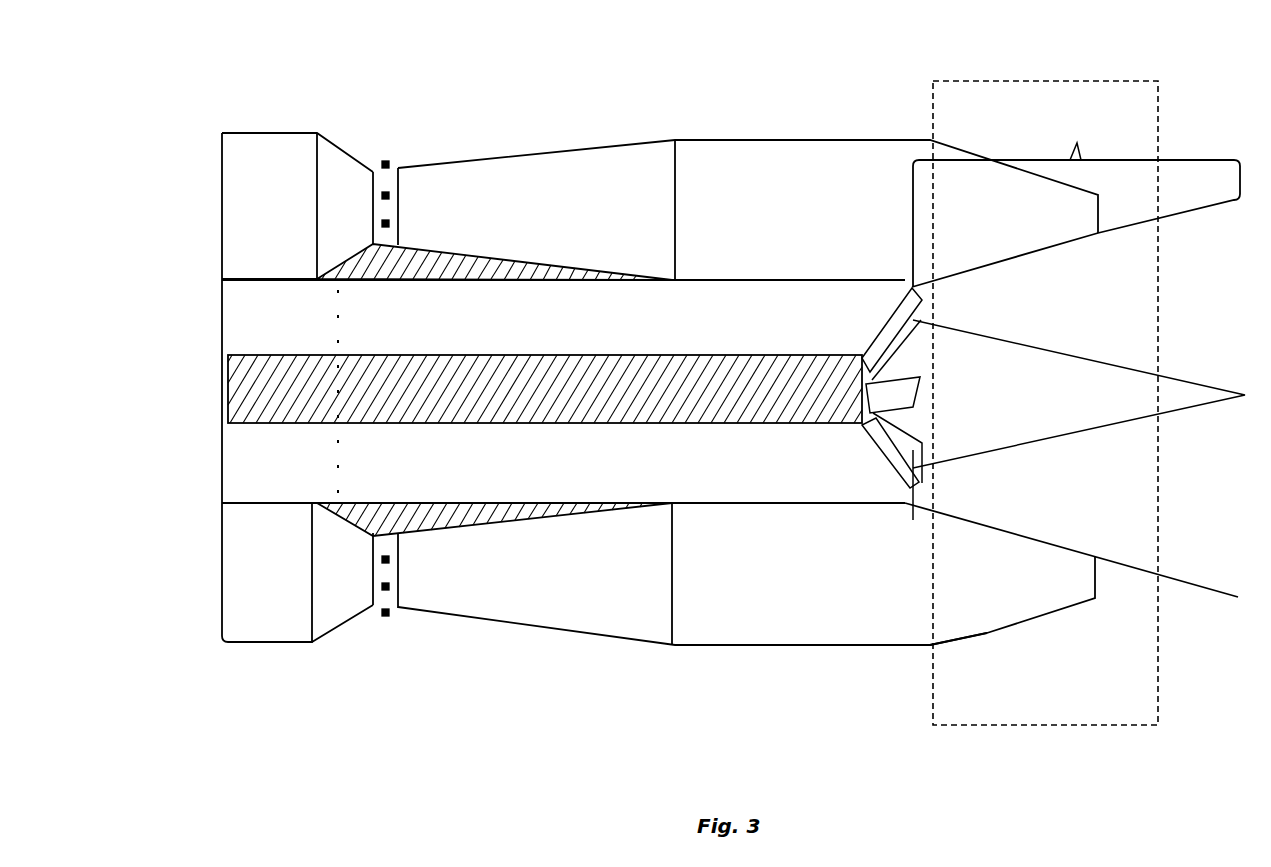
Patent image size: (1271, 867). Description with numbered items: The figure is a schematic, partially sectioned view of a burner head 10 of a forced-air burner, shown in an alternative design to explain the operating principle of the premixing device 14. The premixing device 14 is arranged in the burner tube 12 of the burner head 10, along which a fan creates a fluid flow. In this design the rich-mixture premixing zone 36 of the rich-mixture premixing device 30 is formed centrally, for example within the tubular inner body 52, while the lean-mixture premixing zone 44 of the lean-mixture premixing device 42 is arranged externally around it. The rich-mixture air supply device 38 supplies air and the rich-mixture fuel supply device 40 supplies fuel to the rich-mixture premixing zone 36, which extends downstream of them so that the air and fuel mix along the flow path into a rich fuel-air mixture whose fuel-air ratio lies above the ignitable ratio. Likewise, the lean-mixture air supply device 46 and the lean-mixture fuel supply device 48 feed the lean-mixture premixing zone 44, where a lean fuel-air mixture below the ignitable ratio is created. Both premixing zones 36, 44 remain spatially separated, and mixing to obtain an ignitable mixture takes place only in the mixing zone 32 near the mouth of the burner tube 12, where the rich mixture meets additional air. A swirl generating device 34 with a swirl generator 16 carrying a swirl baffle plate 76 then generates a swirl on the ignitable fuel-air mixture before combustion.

The burner head 10 is at (553, 778).
The burner tube 12 is at (987, 633).
The premixing device 14 is at (737, 623).
The swirl generator 16 is at (905, 300).
The rich-mixture premixing device 30 is at (352, 290).
The mixing zone 32 is at (1045, 388).
The swirl generating device 34 is at (878, 495).
The rich-mixture premixing zone 36 is at (745, 310).
The rich-mixture air supply device 38 is at (243, 460).
The rich-mixture fuel supply device 40 is at (335, 505).
The lean-mixture premixing device 42 is at (438, 635).
The lean-mixture premixing zone 44 is at (636, 170).
The lean-mixture air supply device 46 is at (240, 597).
The lean-mixture fuel supply device 48 is at (382, 612).
The tubular inner body 52 is at (780, 503).
The swirl baffle plate 76 is at (910, 500).